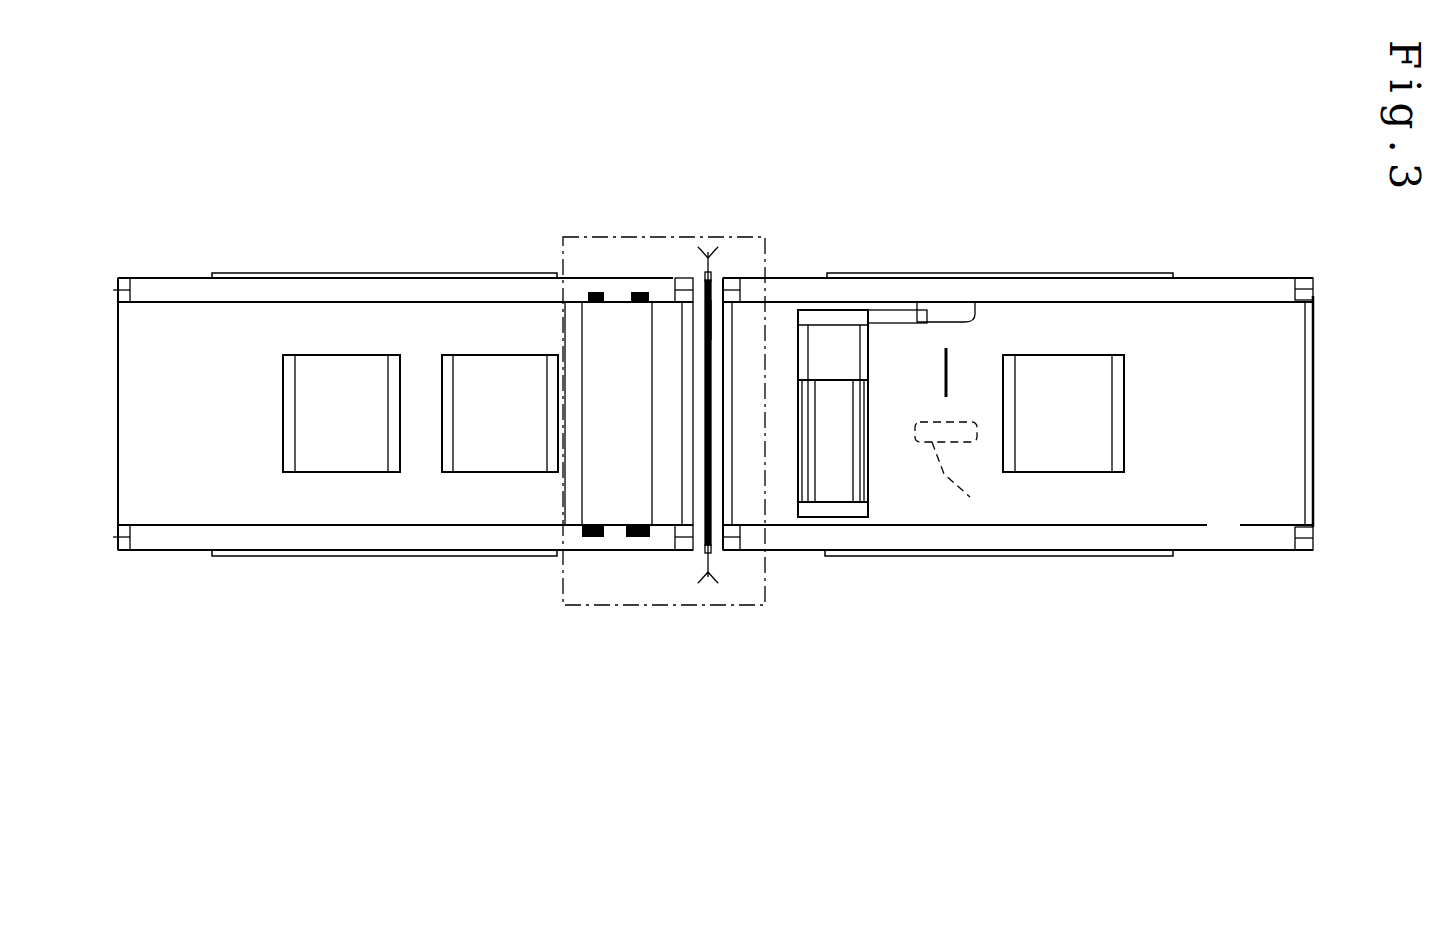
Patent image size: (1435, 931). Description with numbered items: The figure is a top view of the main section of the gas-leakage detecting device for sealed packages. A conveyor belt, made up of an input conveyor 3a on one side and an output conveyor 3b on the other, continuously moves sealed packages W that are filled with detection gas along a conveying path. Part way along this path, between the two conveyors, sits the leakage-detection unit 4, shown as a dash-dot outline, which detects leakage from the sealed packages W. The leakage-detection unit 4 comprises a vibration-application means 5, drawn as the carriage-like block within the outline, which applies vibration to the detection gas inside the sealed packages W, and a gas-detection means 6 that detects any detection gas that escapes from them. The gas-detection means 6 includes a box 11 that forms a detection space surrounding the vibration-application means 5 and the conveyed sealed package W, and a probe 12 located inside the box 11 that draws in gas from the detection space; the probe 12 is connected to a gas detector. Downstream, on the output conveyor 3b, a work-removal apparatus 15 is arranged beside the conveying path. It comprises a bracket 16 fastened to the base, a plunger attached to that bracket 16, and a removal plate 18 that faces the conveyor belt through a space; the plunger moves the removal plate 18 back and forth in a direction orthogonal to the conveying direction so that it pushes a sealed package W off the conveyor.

The input conveyor 3a is at (163, 330).
The output conveyor 3b is at (1152, 342).
The leakage-detection unit 4 is at (606, 258).
The vibration-application means 5 is at (615, 478).
The gas-detection means 6 is at (825, 347).
The box 11 is at (707, 247).
The probe 12 is at (713, 327).
The work-removal apparatus 15 is at (935, 480).
The bracket 16 is at (832, 508).
The removal plate 18 is at (963, 323).
The sealed package W is at (485, 437).